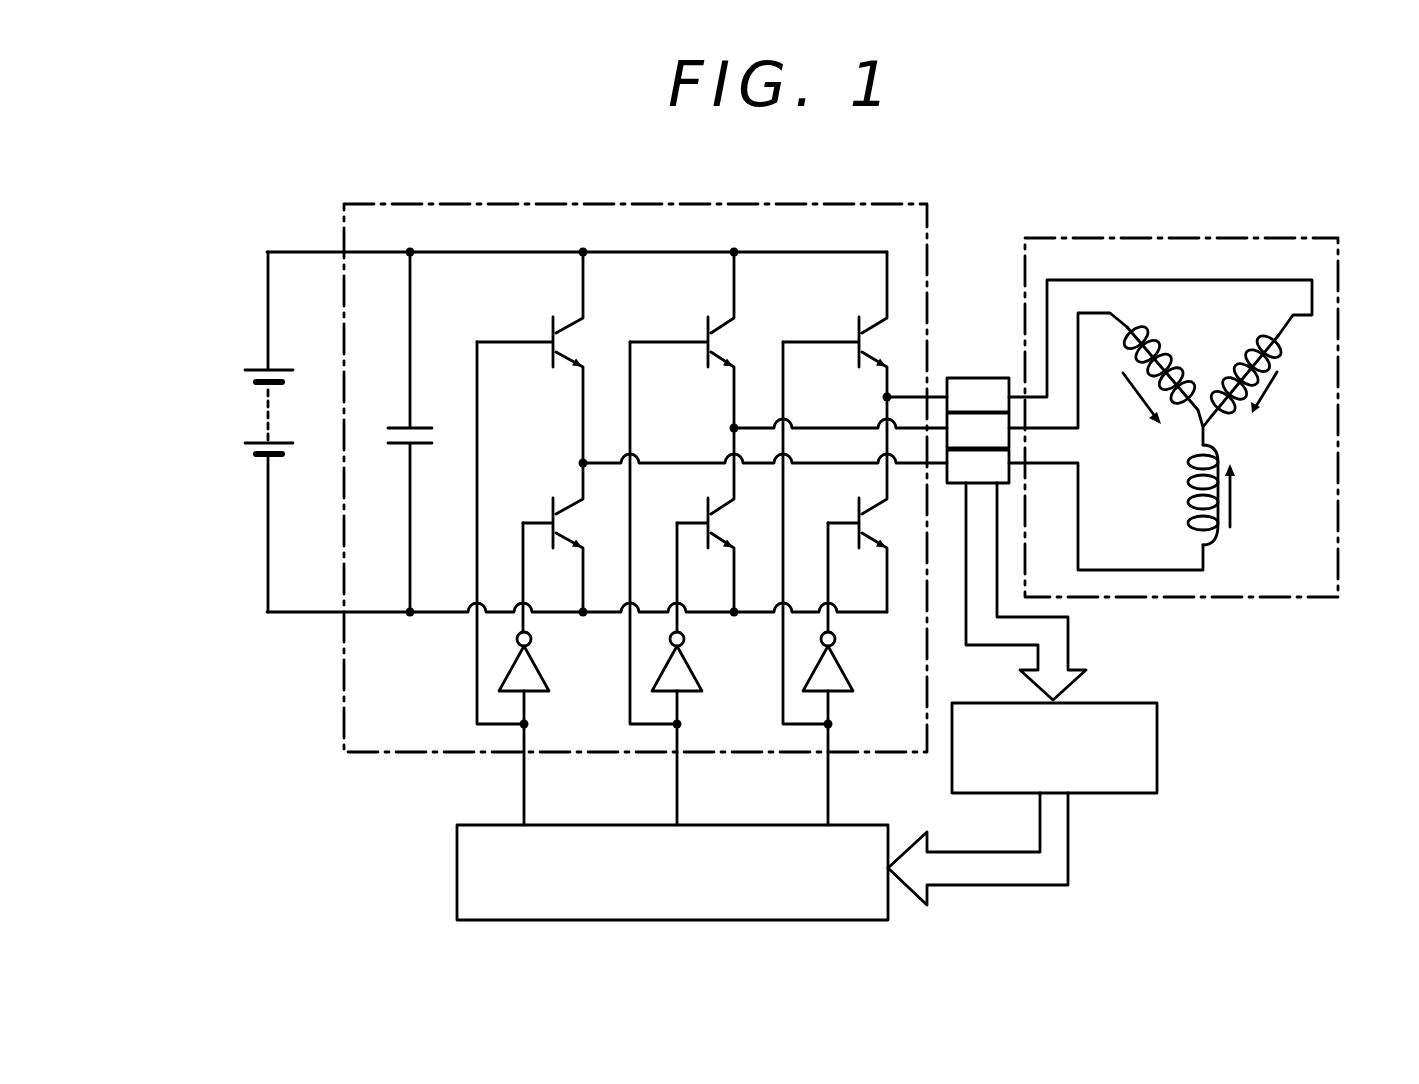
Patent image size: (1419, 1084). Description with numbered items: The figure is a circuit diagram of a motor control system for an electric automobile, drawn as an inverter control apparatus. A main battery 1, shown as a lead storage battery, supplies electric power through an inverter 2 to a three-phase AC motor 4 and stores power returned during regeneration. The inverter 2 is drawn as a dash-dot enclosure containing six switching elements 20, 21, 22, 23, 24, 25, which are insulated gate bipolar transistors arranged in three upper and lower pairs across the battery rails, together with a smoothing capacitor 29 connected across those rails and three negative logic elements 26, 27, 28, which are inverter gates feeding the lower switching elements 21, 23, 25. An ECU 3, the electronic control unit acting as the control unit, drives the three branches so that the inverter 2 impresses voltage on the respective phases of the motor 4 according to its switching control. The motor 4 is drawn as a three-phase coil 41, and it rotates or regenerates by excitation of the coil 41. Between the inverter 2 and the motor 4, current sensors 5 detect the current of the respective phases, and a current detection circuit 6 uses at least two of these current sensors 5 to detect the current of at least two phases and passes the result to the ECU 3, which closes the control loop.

The main battery 1 is at (262, 368).
The inverter 2 is at (612, 204).
The ECU 3 is at (457, 834).
The three-phase AC motor 4 is at (1203, 392).
The current sensors 5 is at (973, 378).
The current detection circuit 6 is at (1157, 735).
The switching element 20 is at (552, 323).
The switching element 21 is at (554, 505).
The switching element 22 is at (707, 323).
The switching element 23 is at (711, 505).
The switching element 24 is at (858, 323).
The switching element 25 is at (862, 505).
The negative logic element 26 is at (540, 676).
The negative logic element 27 is at (693, 676).
The negative logic element 28 is at (844, 676).
The smoothing capacitor 29 is at (450, 410).
The three-phase coil 41 is at (1290, 345).